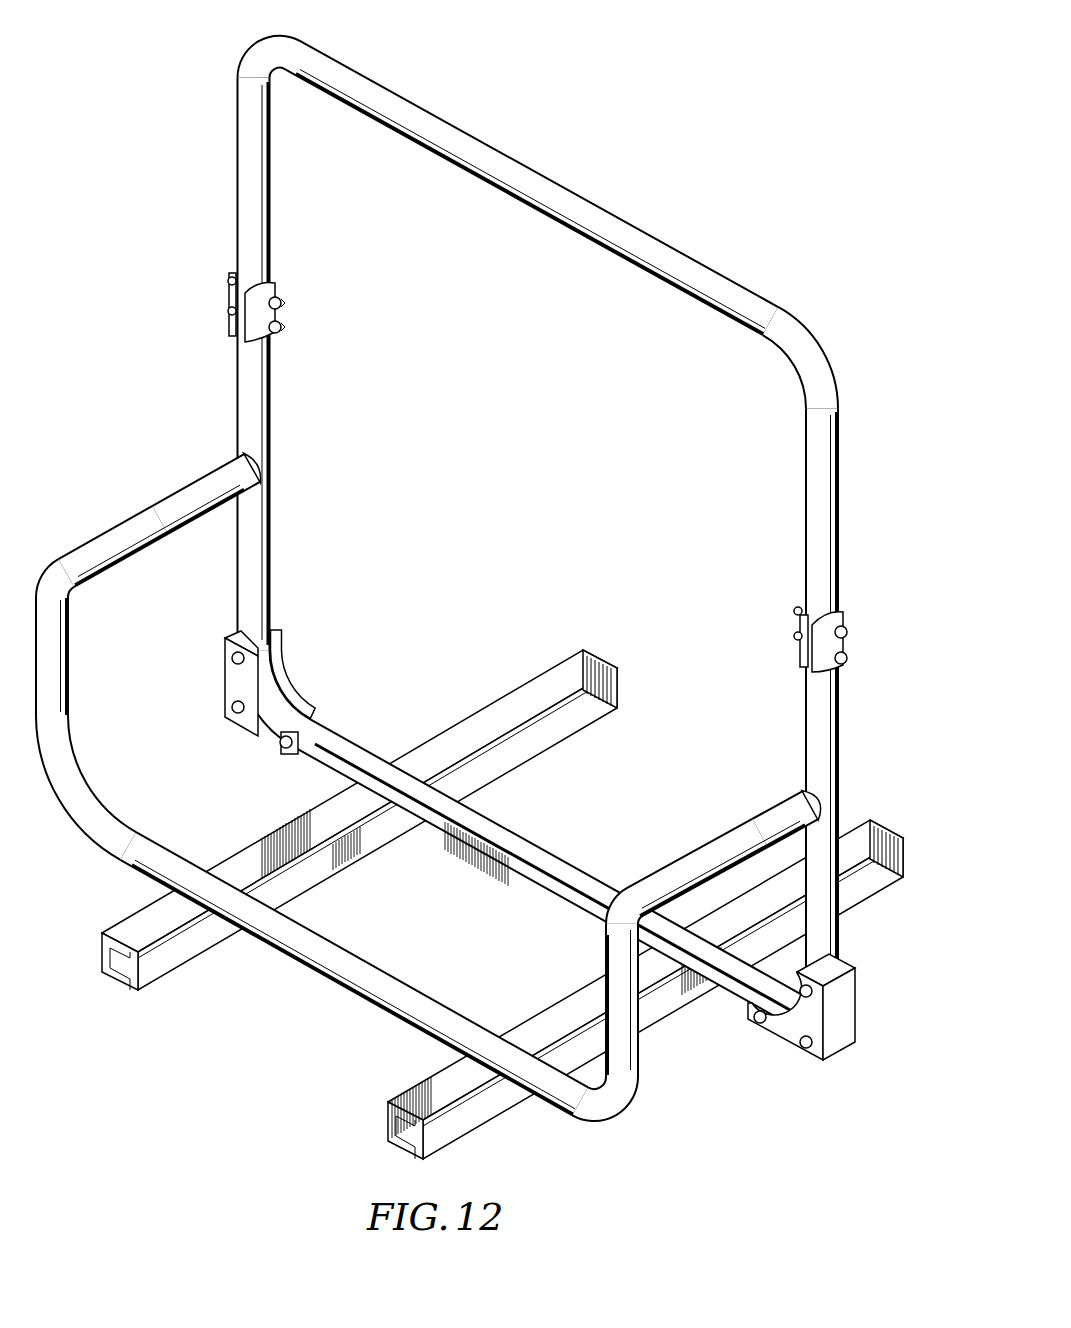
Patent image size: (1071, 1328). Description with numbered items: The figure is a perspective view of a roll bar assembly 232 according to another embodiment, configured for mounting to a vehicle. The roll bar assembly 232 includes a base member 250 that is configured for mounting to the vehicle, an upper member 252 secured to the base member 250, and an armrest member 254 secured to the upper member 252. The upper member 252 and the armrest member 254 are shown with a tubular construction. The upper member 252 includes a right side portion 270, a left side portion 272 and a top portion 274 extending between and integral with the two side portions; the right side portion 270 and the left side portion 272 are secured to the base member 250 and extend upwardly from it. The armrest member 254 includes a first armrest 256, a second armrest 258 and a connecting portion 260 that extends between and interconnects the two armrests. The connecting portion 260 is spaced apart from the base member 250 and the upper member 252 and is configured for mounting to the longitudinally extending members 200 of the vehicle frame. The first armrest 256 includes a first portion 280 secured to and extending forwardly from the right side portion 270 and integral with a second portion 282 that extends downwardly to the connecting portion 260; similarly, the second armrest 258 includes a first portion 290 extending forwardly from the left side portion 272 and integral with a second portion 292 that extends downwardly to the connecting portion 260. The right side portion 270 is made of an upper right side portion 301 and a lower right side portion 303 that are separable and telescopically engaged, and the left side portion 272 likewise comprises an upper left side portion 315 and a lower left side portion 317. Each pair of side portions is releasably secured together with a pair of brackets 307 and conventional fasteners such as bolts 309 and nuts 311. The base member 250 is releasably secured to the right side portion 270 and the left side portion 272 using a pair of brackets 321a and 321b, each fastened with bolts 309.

The longitudinally extending members 200 is at (172, 957).
The roll bar assembly 232 is at (587, 518).
The base member 250 is at (558, 868).
The upper member 252 is at (779, 301).
The armrest member 254 is at (156, 634).
The first armrest 256 is at (188, 476).
The second armrest 258 is at (748, 810).
The connecting portion 260 is at (347, 992).
The right side portion 270 is at (304, 364).
The left side portion 272 is at (870, 697).
The top portion 274 is at (626, 222).
The first portion 280 is at (158, 548).
The second portion 282 is at (74, 652).
The first portion 290 is at (692, 850).
The second portion 292 is at (606, 966).
The upper right side portion 301 is at (272, 188).
The lower right side portion 303 is at (274, 542).
The brackets 307 is at (232, 311).
The bolts 309 is at (229, 660).
The nuts 311 is at (290, 310).
The upper left side portion 315 is at (845, 483).
The lower left side portion 317 is at (845, 723).
The bracket 321a is at (226, 707).
The bracket 321b is at (845, 1045).